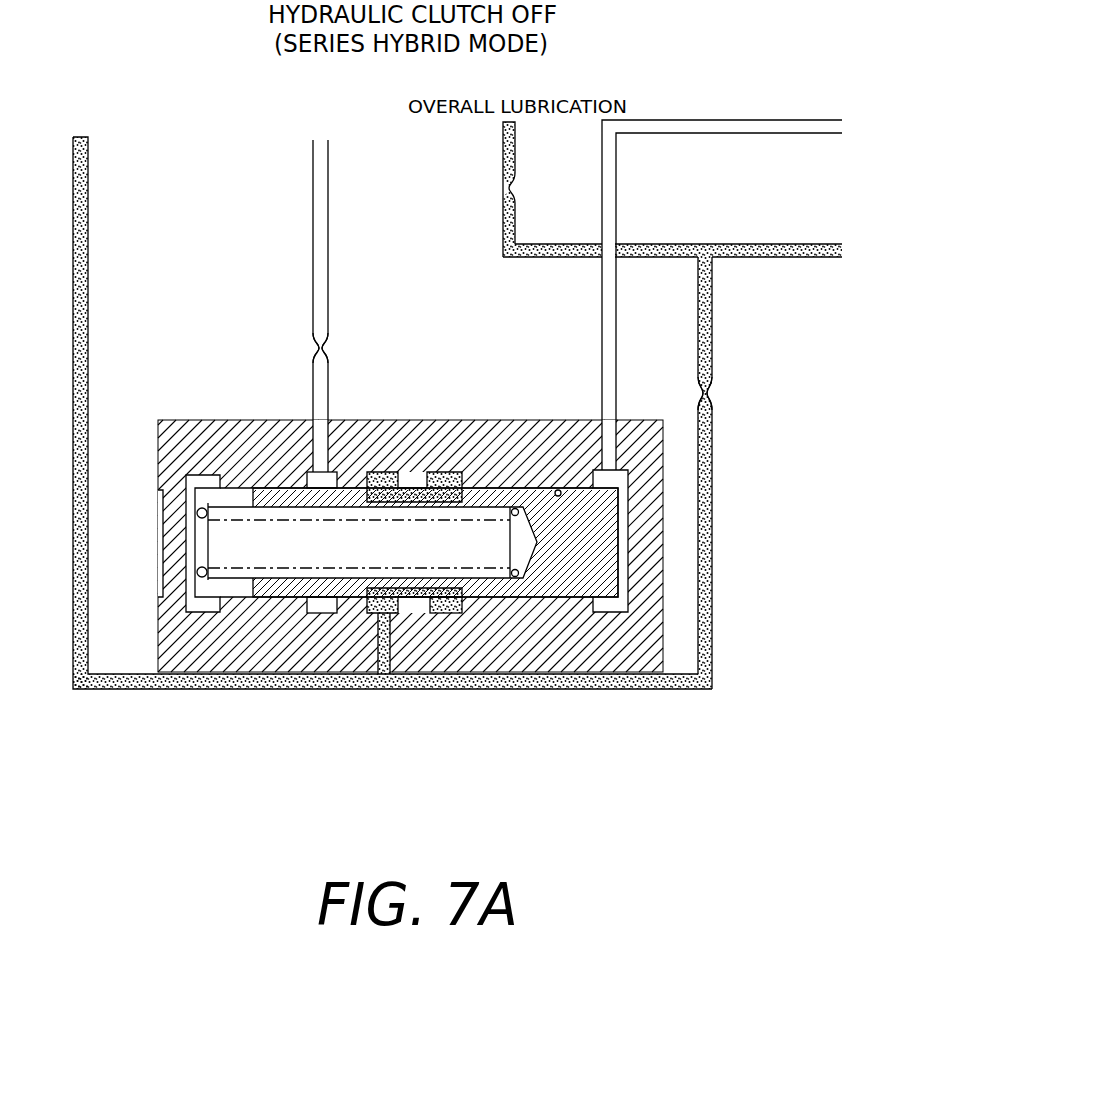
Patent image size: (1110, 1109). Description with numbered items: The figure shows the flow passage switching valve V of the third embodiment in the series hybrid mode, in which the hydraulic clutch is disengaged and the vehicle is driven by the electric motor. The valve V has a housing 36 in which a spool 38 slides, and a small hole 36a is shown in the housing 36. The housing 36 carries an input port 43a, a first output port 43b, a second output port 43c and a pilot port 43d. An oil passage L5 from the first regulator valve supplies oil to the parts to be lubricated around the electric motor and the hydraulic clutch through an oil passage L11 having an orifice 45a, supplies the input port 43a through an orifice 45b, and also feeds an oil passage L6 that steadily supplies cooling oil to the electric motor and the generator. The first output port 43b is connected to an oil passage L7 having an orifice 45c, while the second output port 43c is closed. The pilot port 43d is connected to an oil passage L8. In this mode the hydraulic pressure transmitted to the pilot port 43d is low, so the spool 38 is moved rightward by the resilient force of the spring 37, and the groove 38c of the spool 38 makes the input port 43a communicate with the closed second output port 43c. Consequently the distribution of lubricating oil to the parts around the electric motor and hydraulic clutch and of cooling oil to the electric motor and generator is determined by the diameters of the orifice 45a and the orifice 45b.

The valve housing 36 is at (529, 412).
The housing hole 36a is at (558, 489).
The spring 37 is at (202, 507).
The spool 38 is at (592, 553).
The groove 38c is at (437, 614).
The input port 43a is at (400, 615).
The first output port 43b is at (310, 472).
The second output port 43c is at (432, 470).
The pilot port 43d is at (620, 478).
The orifice 45a is at (512, 190).
The orifice 45b is at (711, 392).
The orifice 45c is at (323, 342).
The oil passage L5 is at (740, 242).
The oil passage L6 is at (86, 280).
The oil passage L7 is at (323, 197).
The oil passage L8 is at (612, 357).
The oil passage L11 is at (577, 258).
The flow passage switching valve V is at (247, 404).